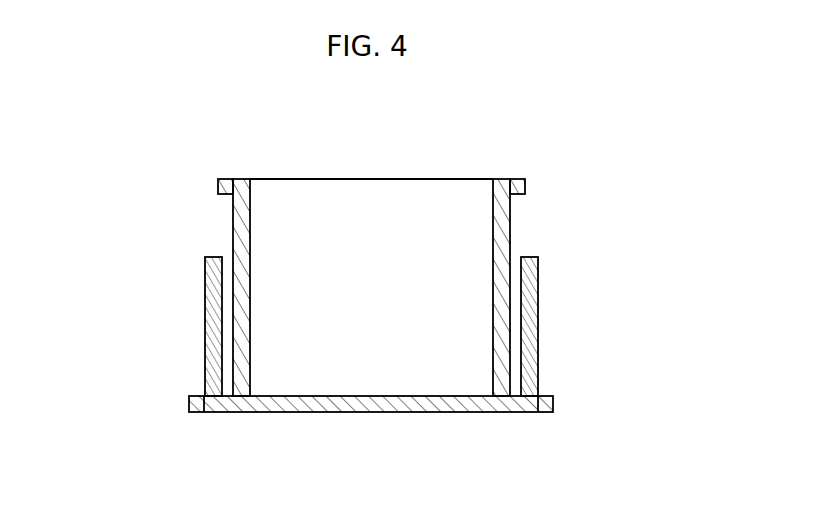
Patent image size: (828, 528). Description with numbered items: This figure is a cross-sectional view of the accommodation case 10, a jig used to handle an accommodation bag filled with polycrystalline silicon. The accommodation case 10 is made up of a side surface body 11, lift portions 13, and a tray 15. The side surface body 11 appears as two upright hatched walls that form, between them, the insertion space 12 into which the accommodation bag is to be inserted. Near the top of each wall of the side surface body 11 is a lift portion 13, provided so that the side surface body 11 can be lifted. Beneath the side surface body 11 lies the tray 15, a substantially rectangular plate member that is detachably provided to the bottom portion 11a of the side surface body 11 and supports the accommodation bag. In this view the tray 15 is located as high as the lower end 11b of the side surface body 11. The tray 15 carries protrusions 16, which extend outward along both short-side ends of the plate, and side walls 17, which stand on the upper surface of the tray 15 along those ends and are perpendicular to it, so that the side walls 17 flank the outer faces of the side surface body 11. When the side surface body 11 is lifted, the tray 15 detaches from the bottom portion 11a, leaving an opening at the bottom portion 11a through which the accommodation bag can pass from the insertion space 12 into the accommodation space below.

The accommodation case 10 is at (544, 132).
The side surface body 11 is at (503, 227).
The bottom portion 11a is at (508, 363).
The lower end 11b is at (243, 396).
The insertion space 12 is at (363, 243).
The lift portion 13 is at (218, 185).
The tray 15 is at (375, 405).
The protrusion 16 is at (195, 403).
The side wall 17 is at (208, 300).